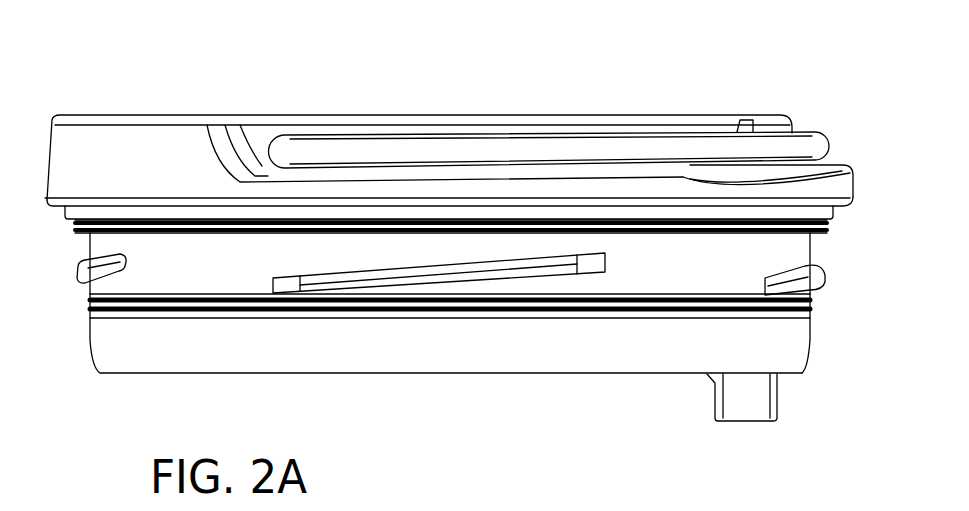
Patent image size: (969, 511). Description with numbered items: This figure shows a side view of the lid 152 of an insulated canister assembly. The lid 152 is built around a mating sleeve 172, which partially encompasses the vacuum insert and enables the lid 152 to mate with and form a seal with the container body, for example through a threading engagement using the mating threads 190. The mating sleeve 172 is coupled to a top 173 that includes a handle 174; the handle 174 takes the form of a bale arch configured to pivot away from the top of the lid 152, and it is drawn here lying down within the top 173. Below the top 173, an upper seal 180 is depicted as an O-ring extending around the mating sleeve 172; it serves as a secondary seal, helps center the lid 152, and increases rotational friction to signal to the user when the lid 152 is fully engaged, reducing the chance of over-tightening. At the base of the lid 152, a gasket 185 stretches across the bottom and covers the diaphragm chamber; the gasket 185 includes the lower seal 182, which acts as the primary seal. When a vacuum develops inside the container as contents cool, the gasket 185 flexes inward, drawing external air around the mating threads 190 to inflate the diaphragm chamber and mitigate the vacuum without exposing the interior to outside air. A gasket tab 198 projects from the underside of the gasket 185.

The lid 152 is at (646, 38).
The top 173 is at (183, 115).
The handle 174 is at (787, 147).
The mating sleeve 172 is at (787, 245).
The upper seal 180 is at (67, 220).
The mating threads 190 is at (85, 272).
The gasket 185 is at (527, 377).
The lower seal 182 is at (783, 377).
The gasket tab 198 is at (750, 418).